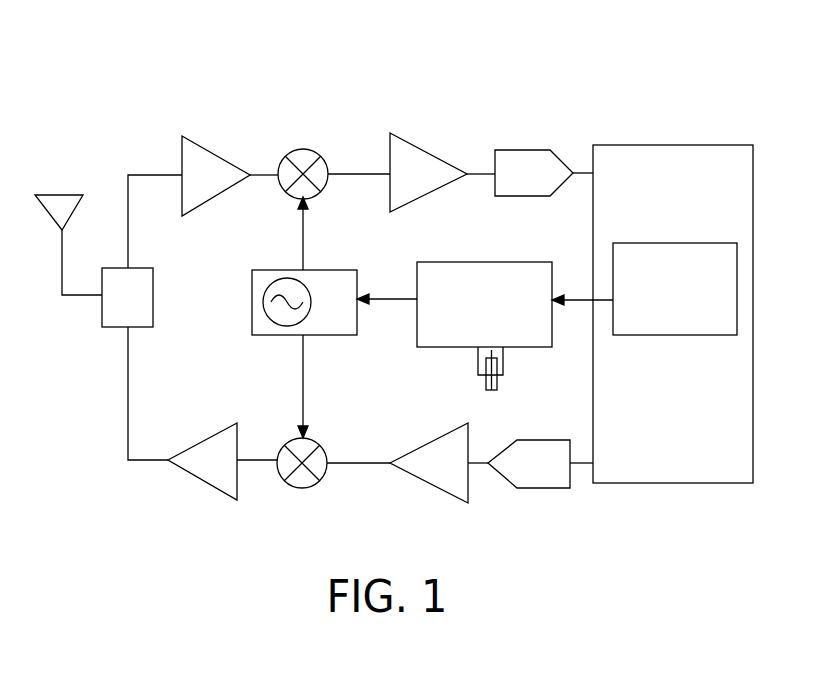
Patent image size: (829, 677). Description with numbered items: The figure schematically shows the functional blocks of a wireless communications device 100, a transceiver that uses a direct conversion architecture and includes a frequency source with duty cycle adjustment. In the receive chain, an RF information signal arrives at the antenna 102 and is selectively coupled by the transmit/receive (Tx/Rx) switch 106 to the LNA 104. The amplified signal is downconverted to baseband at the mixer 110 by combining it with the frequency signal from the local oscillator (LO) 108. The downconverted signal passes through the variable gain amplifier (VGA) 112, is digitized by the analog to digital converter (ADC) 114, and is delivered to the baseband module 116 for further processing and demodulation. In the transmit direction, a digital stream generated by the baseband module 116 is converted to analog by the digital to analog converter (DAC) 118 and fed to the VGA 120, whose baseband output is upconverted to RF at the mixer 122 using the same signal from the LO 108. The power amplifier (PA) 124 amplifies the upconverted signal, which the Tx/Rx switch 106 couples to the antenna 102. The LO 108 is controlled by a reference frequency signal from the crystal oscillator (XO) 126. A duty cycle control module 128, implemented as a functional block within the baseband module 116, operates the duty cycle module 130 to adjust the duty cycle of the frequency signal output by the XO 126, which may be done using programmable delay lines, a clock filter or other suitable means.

The wireless communications device 100 is at (129, 60).
The antenna 102 is at (67, 195).
The LNA 104 is at (205, 145).
The transmit/receive (Tx/Rx) switch 106 is at (155, 289).
The local oscillator (LO) 108 is at (328, 268).
The mixer 110 is at (305, 148).
The variable gain amplifier (VGA) 112 is at (430, 132).
The analog to digital converter (ADC) 114 is at (512, 147).
The baseband module 116 is at (657, 450).
The digital to analog converter (DAC) 118 is at (557, 490).
The VGA 120 is at (437, 488).
The mixer 122 is at (300, 487).
The power amplifier (PA) 124 is at (205, 483).
The crystal oscillator (XO) 126 is at (482, 380).
The duty cycle control module 128 is at (647, 242).
The duty cycle module 130 is at (462, 261).